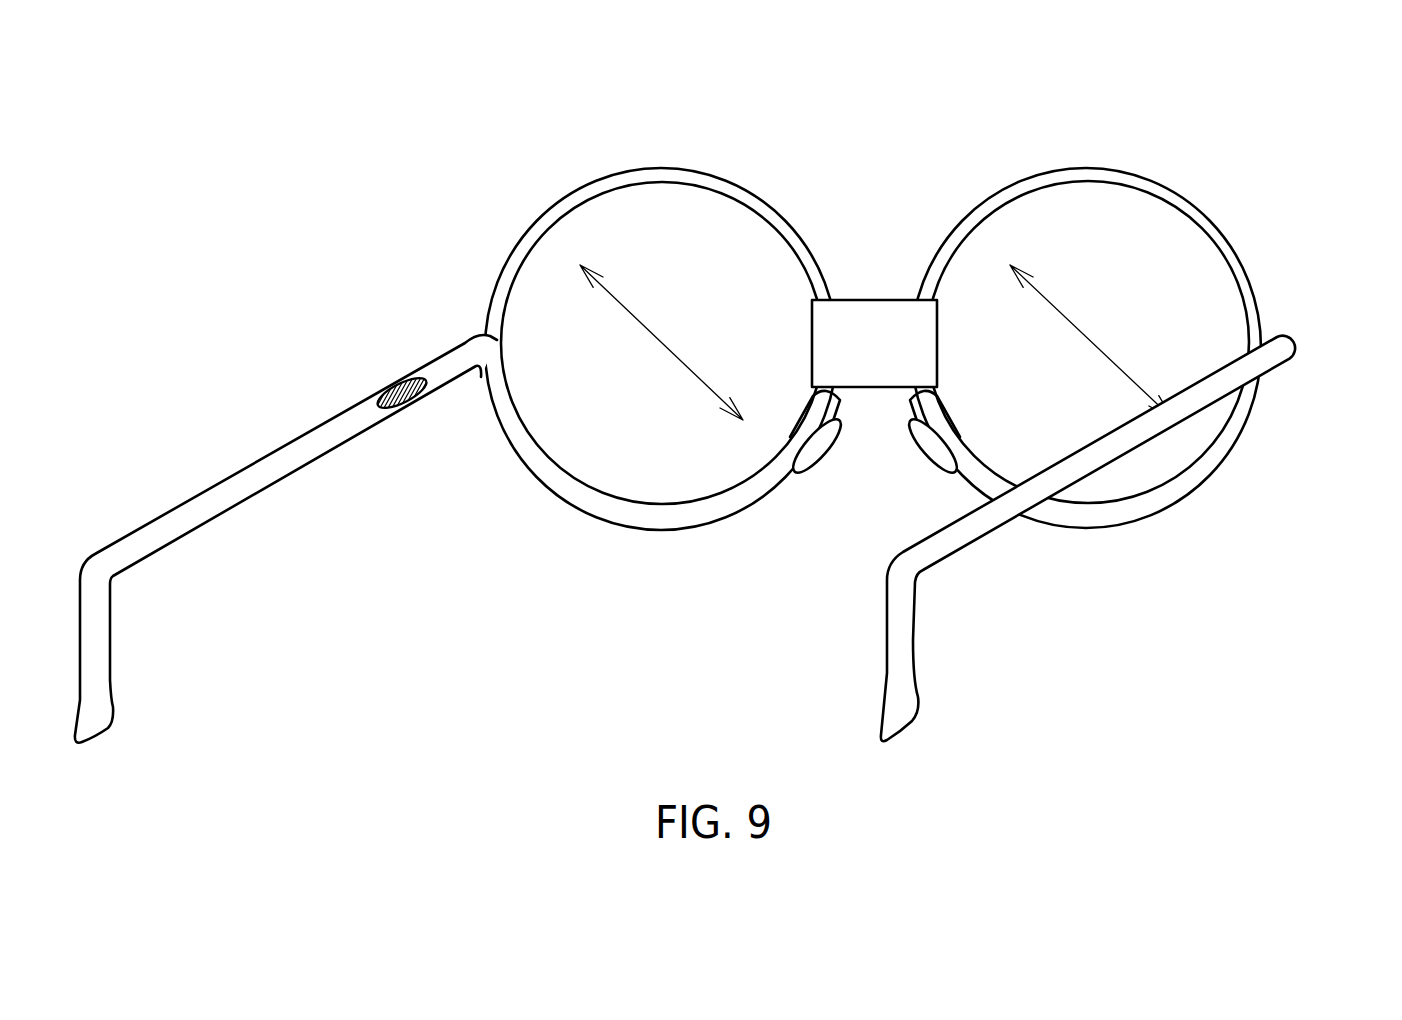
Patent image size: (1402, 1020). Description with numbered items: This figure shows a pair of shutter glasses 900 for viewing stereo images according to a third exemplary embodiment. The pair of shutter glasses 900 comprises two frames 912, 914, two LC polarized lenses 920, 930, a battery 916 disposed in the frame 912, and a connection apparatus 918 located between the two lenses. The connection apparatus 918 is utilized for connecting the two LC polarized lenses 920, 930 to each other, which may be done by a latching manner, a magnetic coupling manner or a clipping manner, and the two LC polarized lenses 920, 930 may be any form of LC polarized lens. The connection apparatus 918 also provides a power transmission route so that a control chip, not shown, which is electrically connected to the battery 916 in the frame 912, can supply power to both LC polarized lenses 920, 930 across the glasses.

The pair of shutter glasses 900 is at (1241, 192).
The frame 912 is at (208, 497).
The frame 914 is at (957, 537).
The battery 916 is at (397, 380).
The connection apparatus 918 is at (887, 312).
The LC polarized lens 920 is at (665, 233).
The LC polarized lens 930 is at (1103, 232).